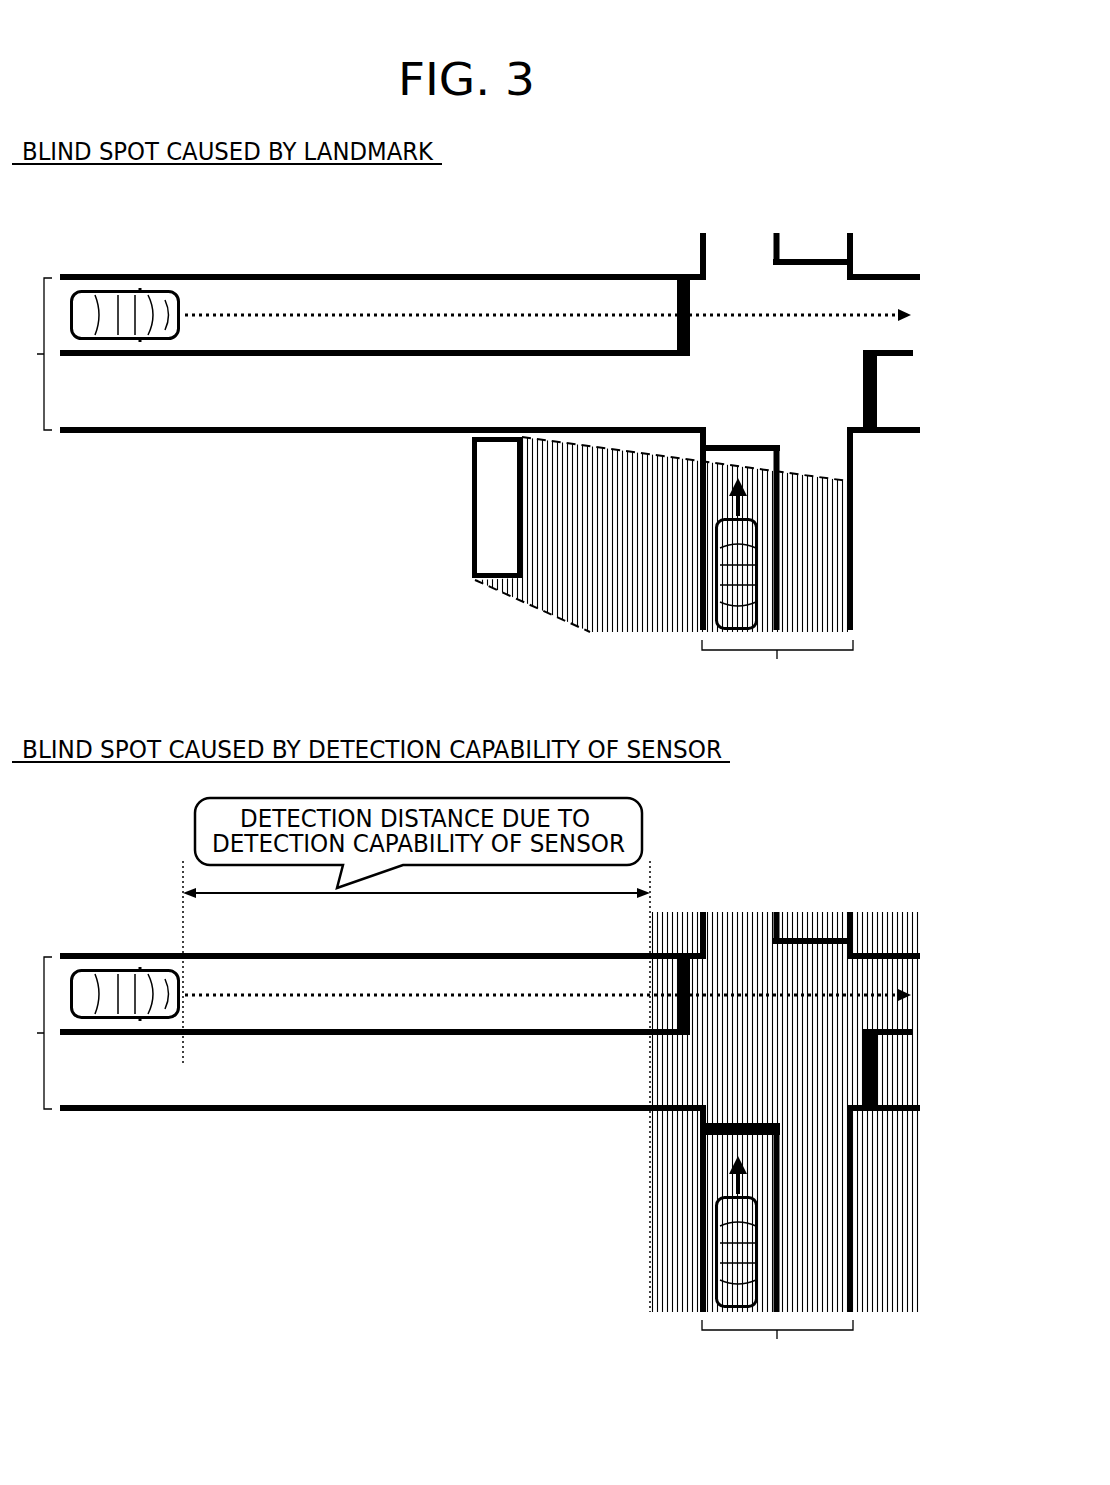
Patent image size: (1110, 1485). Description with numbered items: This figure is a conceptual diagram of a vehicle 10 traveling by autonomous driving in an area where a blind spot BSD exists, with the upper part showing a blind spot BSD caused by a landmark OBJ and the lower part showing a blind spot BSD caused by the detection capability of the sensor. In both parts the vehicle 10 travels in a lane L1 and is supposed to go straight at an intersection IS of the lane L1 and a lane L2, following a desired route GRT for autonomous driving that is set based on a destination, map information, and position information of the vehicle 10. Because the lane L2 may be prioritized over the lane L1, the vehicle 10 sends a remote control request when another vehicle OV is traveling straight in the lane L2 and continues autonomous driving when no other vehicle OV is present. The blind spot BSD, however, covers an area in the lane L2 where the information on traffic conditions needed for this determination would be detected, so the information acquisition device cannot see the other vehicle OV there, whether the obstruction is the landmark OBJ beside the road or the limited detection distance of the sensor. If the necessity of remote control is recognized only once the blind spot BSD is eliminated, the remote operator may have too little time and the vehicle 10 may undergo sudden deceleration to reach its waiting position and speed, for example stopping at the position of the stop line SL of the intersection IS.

The vehicle 10 is at (93, 292).
The lane L1 is at (30, 693).
The desired route GRT is at (437, 310).
The stop line SL is at (673, 279).
The intersection IS is at (868, 260).
The landmark OBJ is at (472, 480).
The blind spot BSD is at (582, 608).
The other vehicle OV is at (715, 600).
The lane L2 is at (777, 1011).